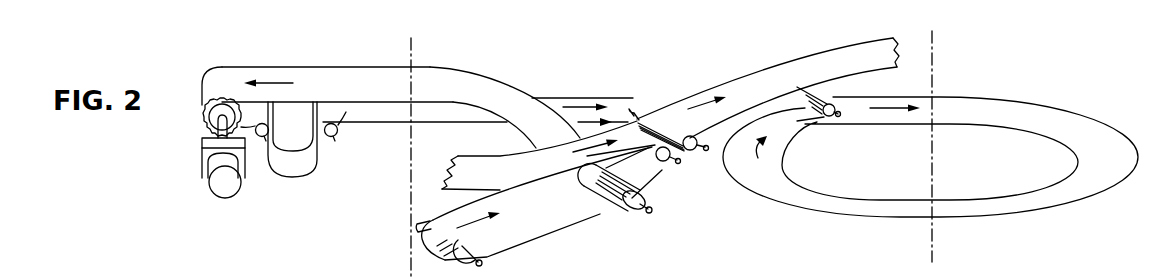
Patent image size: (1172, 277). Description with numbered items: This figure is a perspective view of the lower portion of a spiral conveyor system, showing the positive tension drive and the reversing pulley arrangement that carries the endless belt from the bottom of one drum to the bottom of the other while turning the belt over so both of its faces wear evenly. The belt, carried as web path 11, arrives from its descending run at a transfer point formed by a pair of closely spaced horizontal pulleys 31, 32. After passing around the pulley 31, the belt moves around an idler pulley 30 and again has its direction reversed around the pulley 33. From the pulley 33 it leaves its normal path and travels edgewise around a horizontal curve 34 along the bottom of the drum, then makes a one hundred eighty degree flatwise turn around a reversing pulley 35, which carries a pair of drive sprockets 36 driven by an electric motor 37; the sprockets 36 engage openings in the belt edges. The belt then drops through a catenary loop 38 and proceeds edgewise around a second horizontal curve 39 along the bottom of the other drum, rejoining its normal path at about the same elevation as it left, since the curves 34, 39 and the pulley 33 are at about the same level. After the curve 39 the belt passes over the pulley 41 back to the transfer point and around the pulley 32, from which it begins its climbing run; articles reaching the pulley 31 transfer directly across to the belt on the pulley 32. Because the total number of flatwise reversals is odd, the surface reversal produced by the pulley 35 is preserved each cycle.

The web conveyor belt 11 is at (628, 101).
The idler pulley 30 is at (607, 213).
The horizontal pulley 31 is at (655, 170).
The horizontal pulley 32 is at (683, 158).
The pulley 33 is at (490, 258).
The horizontal curve 34 is at (518, 99).
The reversing pulley 35 is at (232, 47).
The drive sprockets 36 is at (204, 126).
The electric motor 37 is at (218, 183).
The catenary loop 38 is at (308, 168).
The horizontal curve 39 is at (1024, 207).
The pulley 41 is at (826, 123).